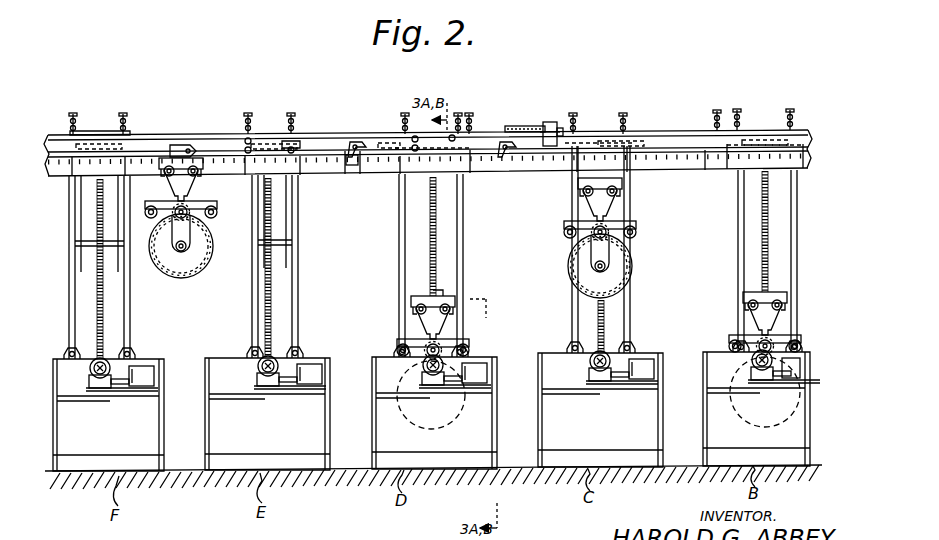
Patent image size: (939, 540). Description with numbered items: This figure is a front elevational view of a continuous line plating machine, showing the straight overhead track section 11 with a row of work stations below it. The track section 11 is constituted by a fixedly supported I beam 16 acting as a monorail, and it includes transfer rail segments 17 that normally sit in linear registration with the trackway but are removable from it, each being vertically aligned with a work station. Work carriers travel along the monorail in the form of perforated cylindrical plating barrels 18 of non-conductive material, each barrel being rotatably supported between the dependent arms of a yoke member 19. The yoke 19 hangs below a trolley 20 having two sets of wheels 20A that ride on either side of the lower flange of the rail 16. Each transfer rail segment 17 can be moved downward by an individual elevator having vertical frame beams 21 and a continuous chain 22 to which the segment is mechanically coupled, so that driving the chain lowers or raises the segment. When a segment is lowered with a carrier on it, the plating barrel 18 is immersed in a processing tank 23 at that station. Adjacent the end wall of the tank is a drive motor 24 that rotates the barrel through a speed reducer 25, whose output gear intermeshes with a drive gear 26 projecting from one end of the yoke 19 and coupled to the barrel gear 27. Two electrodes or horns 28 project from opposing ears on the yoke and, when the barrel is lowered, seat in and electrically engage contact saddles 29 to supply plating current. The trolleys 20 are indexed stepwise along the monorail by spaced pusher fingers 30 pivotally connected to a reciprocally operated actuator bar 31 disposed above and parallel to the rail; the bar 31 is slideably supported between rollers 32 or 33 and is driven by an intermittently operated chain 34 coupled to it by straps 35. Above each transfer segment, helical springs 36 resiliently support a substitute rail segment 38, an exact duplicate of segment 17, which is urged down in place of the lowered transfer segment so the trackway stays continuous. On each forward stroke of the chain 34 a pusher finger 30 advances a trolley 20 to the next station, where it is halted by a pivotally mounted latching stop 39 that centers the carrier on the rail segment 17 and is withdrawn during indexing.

The track section 11 is at (330, 133).
The I beam 16 is at (350, 161).
The transfer rail segment 17 is at (120, 163).
The plating barrel 18 is at (192, 290).
The yoke member 19 is at (194, 217).
The trolley 20 is at (175, 186).
The wheels 20A is at (190, 145).
The vertical frame beams 21 is at (119, 197).
The continuous chain 22 is at (97, 292).
The processing tank 23 is at (372, 440).
The drive motor 24 is at (150, 376).
The speed reducer 25 is at (104, 379).
The drive gear 26 is at (420, 338).
The barrel gear 27 is at (198, 271).
The electrodes or horns 28 is at (211, 210).
The contact saddles 29 is at (68, 350).
The pusher fingers 30 is at (352, 143).
The actuator bar 31 is at (474, 142).
The rollers 32 is at (289, 148).
The rollers 33 is at (455, 135).
The chain 34 is at (525, 128).
The straps 35 is at (553, 125).
The helical springs 36 is at (124, 114).
The substitute rail segment 38 is at (100, 144).
The latching stop 39 is at (246, 134).